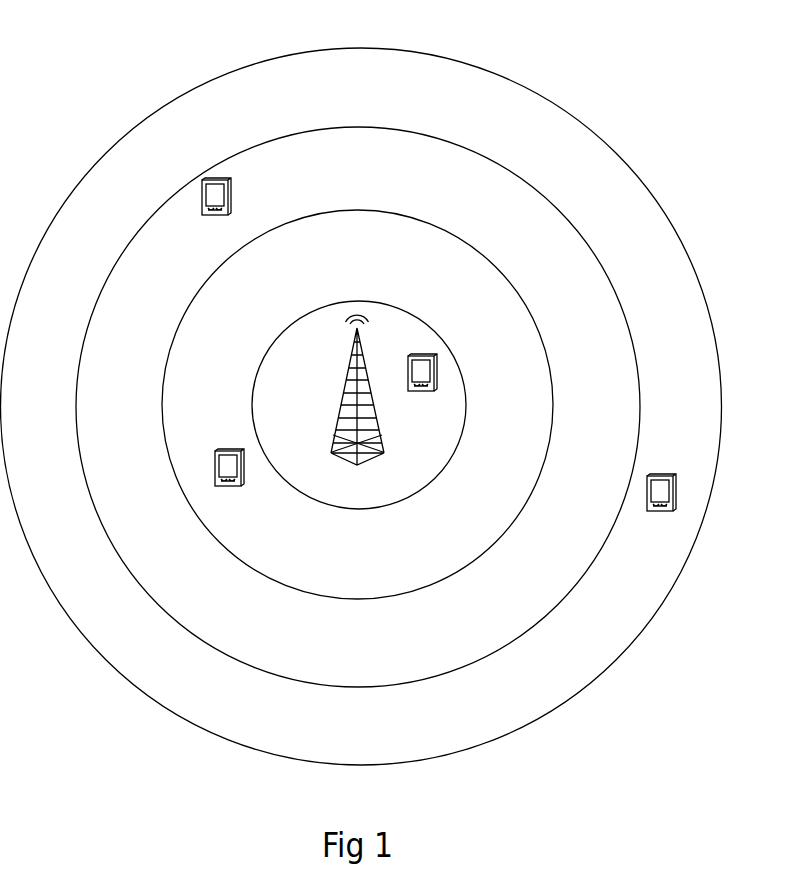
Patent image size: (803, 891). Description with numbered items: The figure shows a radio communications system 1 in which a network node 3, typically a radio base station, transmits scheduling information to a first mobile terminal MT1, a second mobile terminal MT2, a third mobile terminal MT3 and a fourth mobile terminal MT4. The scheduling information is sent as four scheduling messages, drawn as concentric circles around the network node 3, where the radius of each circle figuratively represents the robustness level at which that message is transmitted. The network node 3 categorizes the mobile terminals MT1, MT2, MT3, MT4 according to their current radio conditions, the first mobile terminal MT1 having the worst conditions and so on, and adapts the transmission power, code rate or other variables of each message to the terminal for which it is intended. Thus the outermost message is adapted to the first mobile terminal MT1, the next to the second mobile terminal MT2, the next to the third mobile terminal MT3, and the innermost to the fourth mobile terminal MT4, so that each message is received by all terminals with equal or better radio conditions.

The radio communications system 1 is at (106, 113).
The network node 3 is at (361, 403).
The first mobile terminal MT1 is at (664, 508).
The second mobile terminal MT2 is at (217, 212).
The third mobile terminal MT3 is at (230, 483).
The fourth mobile terminal MT4 is at (425, 388).